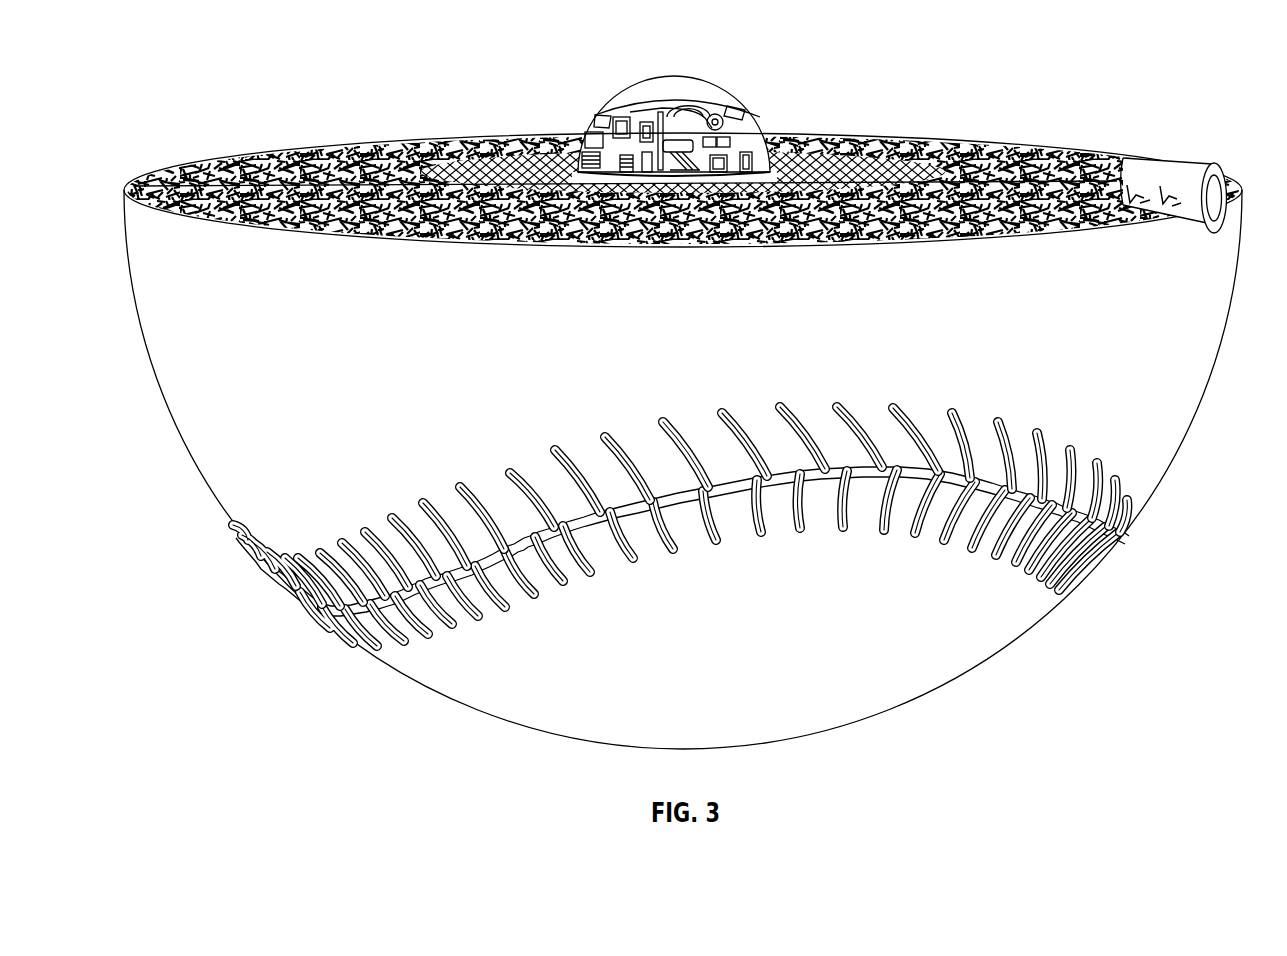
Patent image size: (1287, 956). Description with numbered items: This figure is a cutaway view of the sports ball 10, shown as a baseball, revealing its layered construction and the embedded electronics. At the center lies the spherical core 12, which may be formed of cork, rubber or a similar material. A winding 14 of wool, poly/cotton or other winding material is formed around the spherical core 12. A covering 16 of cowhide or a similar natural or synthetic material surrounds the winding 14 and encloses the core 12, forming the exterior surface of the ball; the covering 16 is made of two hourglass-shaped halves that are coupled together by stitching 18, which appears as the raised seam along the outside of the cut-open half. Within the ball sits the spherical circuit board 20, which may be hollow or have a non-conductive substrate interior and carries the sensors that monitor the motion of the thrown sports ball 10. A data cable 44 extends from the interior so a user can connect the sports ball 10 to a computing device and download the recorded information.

The sports ball 10 is at (683, 389).
The spherical core 12 is at (866, 151).
The winding 14 is at (1022, 146).
The covering 16 is at (1180, 411).
The stitching 18 is at (1094, 513).
The spherical circuit board 20 is at (737, 54).
The data cable 44 is at (1181, 172).